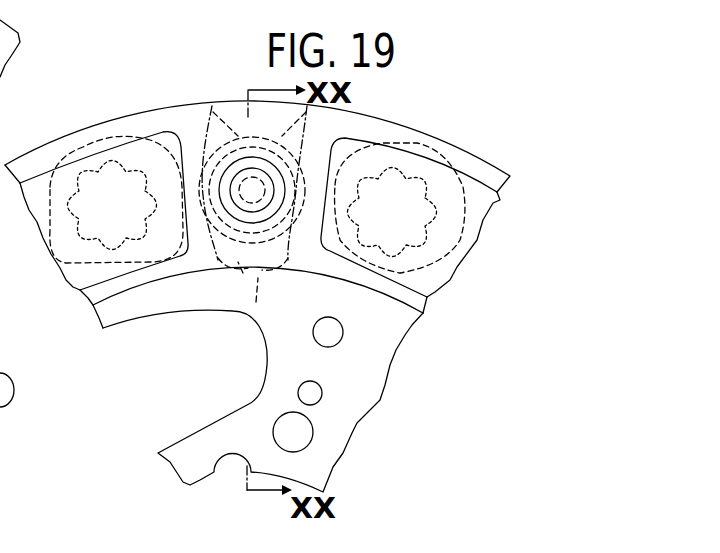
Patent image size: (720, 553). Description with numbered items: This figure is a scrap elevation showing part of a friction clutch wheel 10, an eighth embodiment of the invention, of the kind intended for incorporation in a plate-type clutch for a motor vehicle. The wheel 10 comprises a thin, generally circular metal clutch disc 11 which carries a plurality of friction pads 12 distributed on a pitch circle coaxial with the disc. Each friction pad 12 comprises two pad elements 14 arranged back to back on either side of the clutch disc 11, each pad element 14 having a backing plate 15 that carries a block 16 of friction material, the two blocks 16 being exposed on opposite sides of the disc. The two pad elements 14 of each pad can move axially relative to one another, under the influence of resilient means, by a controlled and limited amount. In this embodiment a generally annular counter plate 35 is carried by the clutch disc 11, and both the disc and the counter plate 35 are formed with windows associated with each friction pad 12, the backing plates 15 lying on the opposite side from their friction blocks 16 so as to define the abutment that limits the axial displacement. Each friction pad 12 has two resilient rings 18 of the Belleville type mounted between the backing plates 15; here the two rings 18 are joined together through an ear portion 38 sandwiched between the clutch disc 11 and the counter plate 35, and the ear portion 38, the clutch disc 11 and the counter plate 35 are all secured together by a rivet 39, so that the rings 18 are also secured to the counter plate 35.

The friction clutch wheel 10 is at (218, 84).
The clutch disc 11 is at (370, 375).
The friction pad 12 is at (126, 110).
The pad element 14 is at (65, 299).
The backing plate 15 is at (228, 284).
The block of friction material 16 is at (122, 217).
The resilient ring 18 is at (72, 262).
The counter plate 35 is at (253, 280).
The ear portion 38 is at (235, 188).
The rivet 39 is at (274, 188).